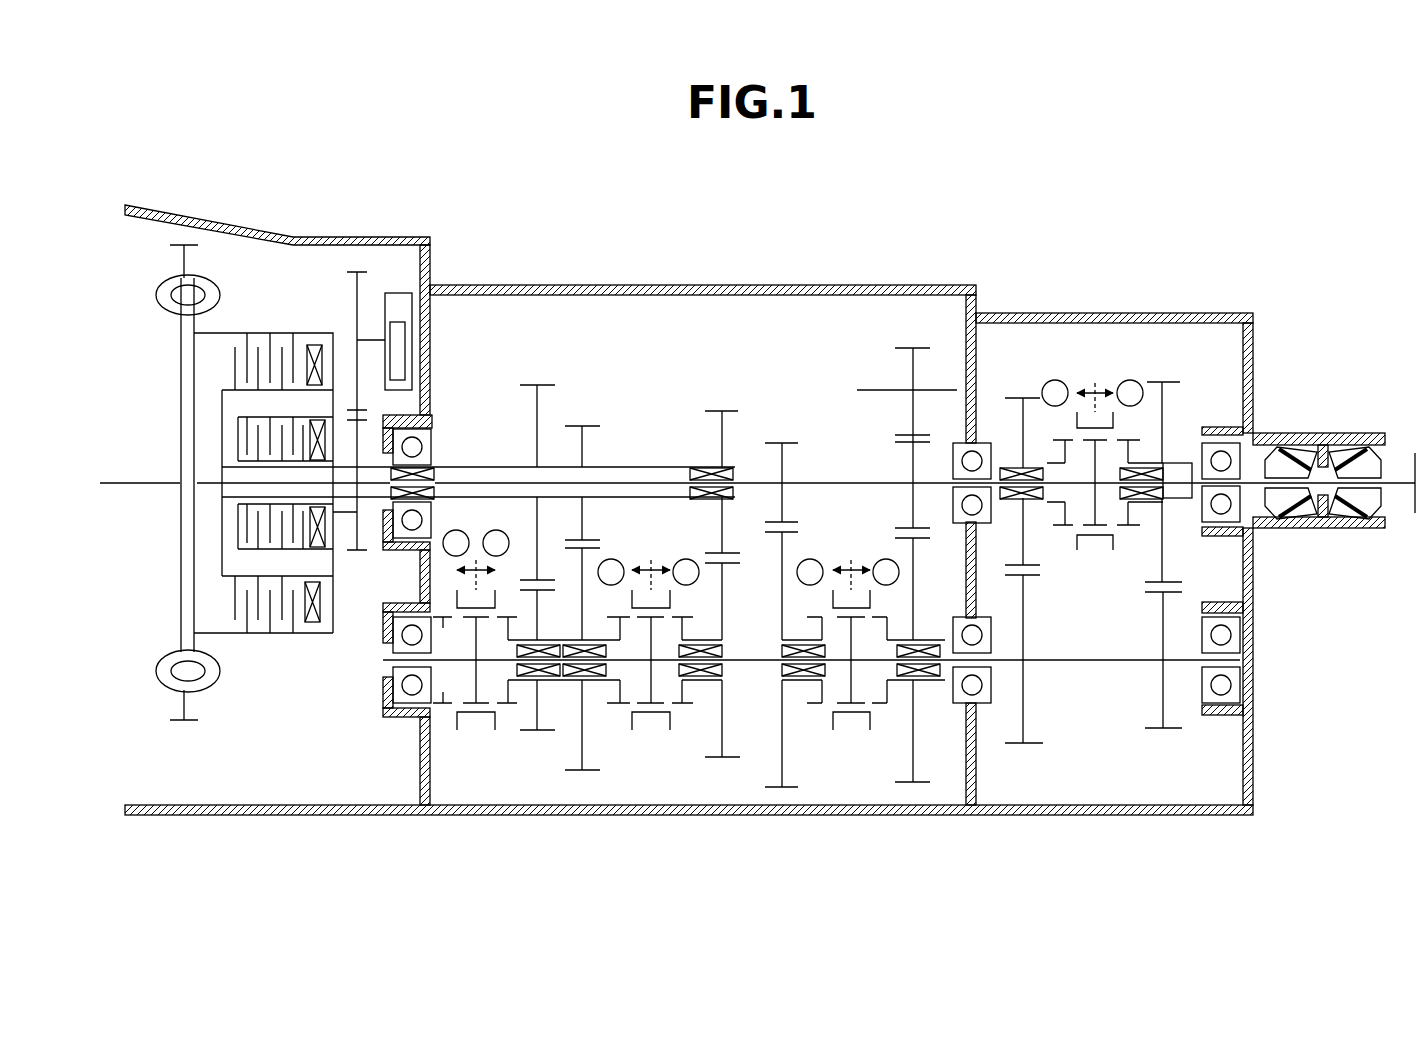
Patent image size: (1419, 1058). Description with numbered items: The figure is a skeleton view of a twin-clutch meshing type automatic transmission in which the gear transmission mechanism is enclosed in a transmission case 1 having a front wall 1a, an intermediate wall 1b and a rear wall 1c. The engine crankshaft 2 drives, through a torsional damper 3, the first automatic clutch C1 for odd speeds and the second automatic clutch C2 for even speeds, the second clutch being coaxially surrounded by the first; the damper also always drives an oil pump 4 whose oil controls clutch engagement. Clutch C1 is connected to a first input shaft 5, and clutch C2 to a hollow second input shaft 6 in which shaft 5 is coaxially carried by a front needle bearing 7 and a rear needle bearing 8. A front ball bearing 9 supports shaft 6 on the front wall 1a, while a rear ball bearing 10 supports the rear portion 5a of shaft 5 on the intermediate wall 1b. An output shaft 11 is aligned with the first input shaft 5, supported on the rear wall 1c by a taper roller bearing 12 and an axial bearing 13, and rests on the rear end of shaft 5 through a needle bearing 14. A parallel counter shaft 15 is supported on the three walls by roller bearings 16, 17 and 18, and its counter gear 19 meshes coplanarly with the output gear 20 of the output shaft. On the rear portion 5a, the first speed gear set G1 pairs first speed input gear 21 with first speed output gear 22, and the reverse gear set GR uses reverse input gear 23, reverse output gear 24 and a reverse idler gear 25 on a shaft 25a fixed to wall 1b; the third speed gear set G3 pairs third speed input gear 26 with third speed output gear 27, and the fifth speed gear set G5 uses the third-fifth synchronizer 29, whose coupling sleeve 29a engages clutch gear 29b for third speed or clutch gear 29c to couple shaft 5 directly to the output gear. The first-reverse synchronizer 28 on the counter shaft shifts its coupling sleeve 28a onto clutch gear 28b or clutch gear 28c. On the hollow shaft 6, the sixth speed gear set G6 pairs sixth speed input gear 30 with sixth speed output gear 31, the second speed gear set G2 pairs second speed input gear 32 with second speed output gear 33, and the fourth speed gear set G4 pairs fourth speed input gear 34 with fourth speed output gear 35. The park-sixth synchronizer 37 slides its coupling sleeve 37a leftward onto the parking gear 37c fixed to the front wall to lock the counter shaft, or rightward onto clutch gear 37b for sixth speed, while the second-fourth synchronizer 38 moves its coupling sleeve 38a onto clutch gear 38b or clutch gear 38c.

The transmission case 1 is at (755, 500).
The front wall 1a is at (433, 340).
The intermediate wall 1b is at (978, 400).
The rear wall 1c is at (1253, 325).
The crankshaft 2 is at (142, 482).
The torsional damper 3 is at (160, 292).
The oil pump 4 is at (397, 293).
The first input shaft 5 is at (512, 483).
The rear portion of first input shaft 5a is at (815, 482).
The second input shaft 6 is at (625, 465).
The front bearing 7 is at (440, 472).
The rear bearing 8 is at (695, 467).
The front bearing 9 is at (432, 430).
The rear bearing 10 is at (957, 445).
The output shaft 11 is at (1397, 480).
The bearing 12 is at (1220, 445).
The bearing 13 is at (1288, 462).
The bearing 14 is at (1140, 498).
The counter shaft 15 is at (1100, 661).
The bearing 16 is at (397, 678).
The bearing 17 is at (978, 688).
The bearing 18 is at (1225, 685).
The counter gear 19 is at (1160, 730).
The output gear 20 is at (1168, 382).
The first speed input gear 21 is at (775, 442).
The first speed output gear 22 is at (775, 788).
The reverse input gear 23 is at (910, 458).
The reverse output gear 24 is at (918, 783).
The reverse idler gear 25 is at (896, 438).
The shaft 25a is at (897, 421).
The third speed input gear 26 is at (1012, 400).
The third speed output gear 27 is at (1033, 745).
The first-reverse synchromesh mechanism 28 is at (847, 719).
The coupling sleeve 28a is at (851, 727).
The clutch gear 28b is at (814, 704).
The clutch gear 28c is at (889, 704).
The third-fifth synchromesh mechanism 29 is at (1093, 518).
The coupling sleeve 29a is at (1095, 556).
The clutch gear 29b is at (1070, 548).
The clutch gear 29c is at (1118, 548).
The sixth speed input gear 30 is at (537, 405).
The sixth speed output gear 31 is at (540, 733).
The second speed input gear 32 is at (580, 422).
The second speed output gear 33 is at (583, 772).
The fourth speed input gear 34 is at (718, 408).
The fourth speed output gear 35 is at (722, 758).
The park-sixth synchromesh mechanism 37 is at (490, 706).
The coupling sleeve 37a is at (477, 727).
The clutch gear 37b is at (548, 705).
The parking gear 37c is at (447, 703).
The second-fourth synchromesh mechanism 38 is at (650, 719).
The coupling sleeve 38a is at (651, 727).
The clutch gear 38b is at (614, 704).
The clutch gear 38c is at (694, 704).
The first automatic clutch C1 is at (282, 338).
The second automatic clutch C2 is at (238, 528).
The first speed gear set G1 is at (769, 421).
The second speed gear set G2 is at (585, 425).
The third speed gear set G3 is at (1022, 446).
The fourth speed gear set G4 is at (702, 430).
The fifth speed gear set G5 is at (1141, 454).
The sixth speed gear set G6 is at (512, 441).
The reverse gear set GR is at (891, 419).